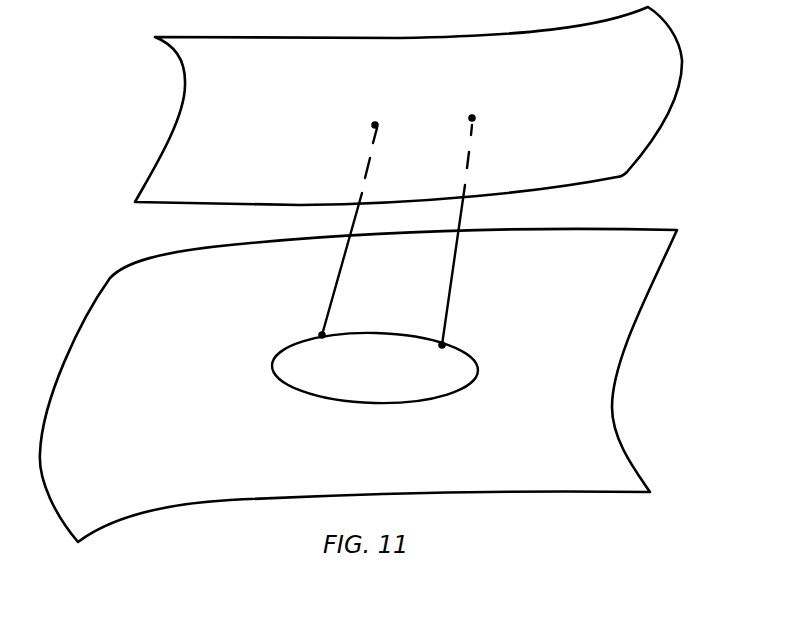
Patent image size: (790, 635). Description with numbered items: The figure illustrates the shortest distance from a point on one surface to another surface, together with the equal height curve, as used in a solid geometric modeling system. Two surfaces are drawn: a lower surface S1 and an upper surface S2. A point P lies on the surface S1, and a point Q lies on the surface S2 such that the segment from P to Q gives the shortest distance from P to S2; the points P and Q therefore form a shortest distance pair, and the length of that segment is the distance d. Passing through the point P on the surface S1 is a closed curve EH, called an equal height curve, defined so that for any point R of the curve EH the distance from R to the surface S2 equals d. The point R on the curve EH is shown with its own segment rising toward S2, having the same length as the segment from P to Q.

The surface S1 is at (371, 385).
The surface S2 is at (418, 106).
The equal height curve EH is at (388, 373).
The point P is at (340, 282).
The point Q is at (376, 138).
The point R is at (448, 246).